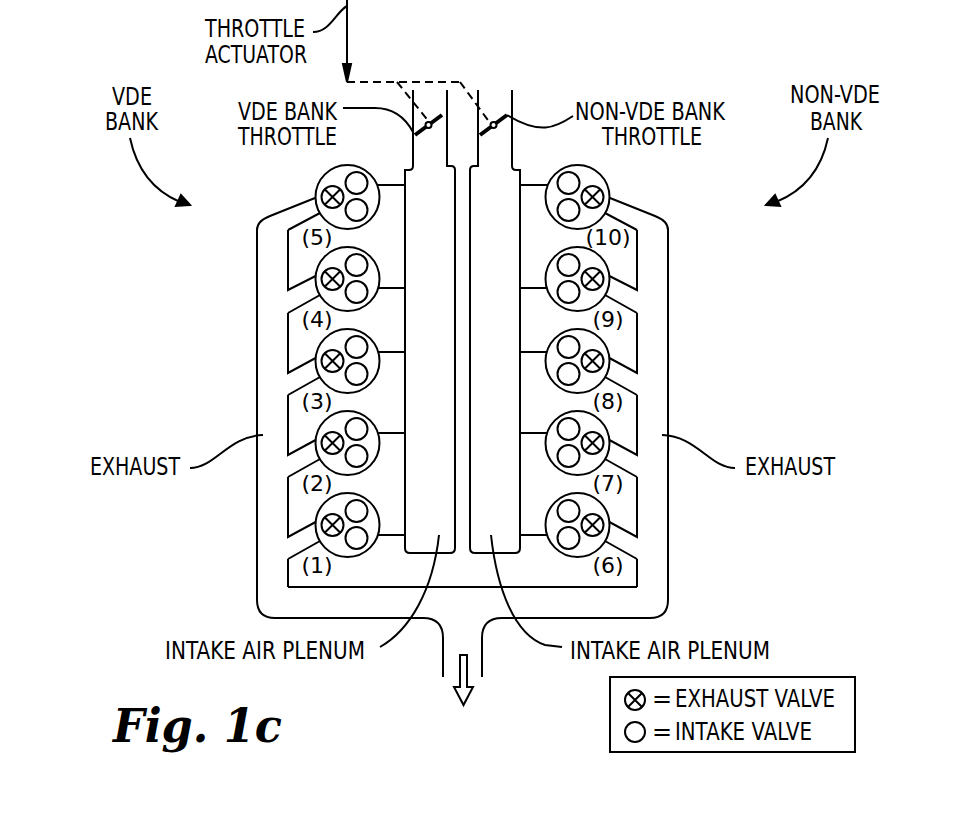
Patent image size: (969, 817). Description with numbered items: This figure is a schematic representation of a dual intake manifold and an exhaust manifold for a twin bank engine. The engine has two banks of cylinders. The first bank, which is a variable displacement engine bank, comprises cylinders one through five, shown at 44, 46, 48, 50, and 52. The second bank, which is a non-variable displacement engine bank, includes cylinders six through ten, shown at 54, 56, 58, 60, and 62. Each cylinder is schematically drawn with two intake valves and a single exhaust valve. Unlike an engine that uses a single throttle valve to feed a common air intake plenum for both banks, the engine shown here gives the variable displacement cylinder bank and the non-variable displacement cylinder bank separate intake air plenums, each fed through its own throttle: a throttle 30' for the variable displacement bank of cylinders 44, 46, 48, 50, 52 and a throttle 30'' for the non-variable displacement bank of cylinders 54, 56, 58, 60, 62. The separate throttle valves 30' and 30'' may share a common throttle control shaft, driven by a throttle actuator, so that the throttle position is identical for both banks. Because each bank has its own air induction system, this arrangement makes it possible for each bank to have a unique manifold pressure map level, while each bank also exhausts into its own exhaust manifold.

The throttle 30' is at (427, 75).
The throttle 30'' is at (490, 75).
The cylinder 1 44 is at (378, 517).
The cylinder 2 46 is at (378, 451).
The cylinder 3 48 is at (378, 369).
The cylinder 4 50 is at (378, 272).
The cylinder 5 52 is at (378, 204).
The cylinder 6 54 is at (547, 517).
The cylinder 7 56 is at (547, 451).
The cylinder 8 58 is at (547, 369).
The cylinder 9 60 is at (547, 272).
The cylinder 10 62 is at (547, 204).